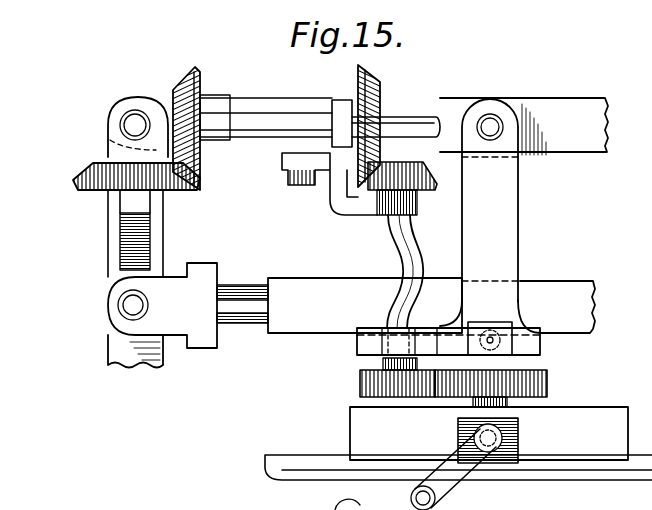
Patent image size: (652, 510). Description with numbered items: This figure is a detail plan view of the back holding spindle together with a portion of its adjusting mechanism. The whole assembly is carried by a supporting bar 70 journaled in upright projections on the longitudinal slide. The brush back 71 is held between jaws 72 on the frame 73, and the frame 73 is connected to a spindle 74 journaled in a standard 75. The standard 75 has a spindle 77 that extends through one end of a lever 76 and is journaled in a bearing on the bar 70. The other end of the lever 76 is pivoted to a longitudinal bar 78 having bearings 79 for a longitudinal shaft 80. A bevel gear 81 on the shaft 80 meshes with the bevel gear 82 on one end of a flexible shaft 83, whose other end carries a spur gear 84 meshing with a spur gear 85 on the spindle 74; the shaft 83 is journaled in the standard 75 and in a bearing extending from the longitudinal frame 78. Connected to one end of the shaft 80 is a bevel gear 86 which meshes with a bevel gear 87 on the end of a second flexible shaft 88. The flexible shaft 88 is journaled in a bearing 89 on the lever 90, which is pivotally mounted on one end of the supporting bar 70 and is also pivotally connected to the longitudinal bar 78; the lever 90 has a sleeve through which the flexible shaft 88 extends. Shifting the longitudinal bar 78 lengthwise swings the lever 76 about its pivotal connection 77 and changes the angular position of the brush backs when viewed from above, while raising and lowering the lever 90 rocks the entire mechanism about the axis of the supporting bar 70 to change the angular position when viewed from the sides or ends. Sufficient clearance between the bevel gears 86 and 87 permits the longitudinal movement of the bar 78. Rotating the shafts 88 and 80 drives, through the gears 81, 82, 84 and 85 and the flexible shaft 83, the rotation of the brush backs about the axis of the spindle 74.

The supporting bar 70 is at (339, 305).
The brush back 71 is at (458, 482).
The jaws 72 is at (505, 468).
The frame 73 is at (489, 433).
The spindle 74 is at (505, 361).
The standard 75 is at (546, 334).
The lever 76 is at (490, 216).
The spindle 77 is at (489, 330).
The longitudinal bar 78 is at (524, 126).
The bearings 79 is at (343, 106).
The longitudinal shaft 80 is at (419, 120).
The bevel gear 81 is at (378, 95).
The bevel gear 82 is at (409, 190).
The flexible shaft 83 is at (416, 252).
The spur gear 84 is at (358, 383).
The spur gear 85 is at (540, 385).
The bevel gear 86 is at (201, 92).
The bevel gear 87 is at (96, 173).
The flexible shaft 88 is at (120, 244).
The bearing 89 is at (116, 205).
The lever 90 is at (110, 145).